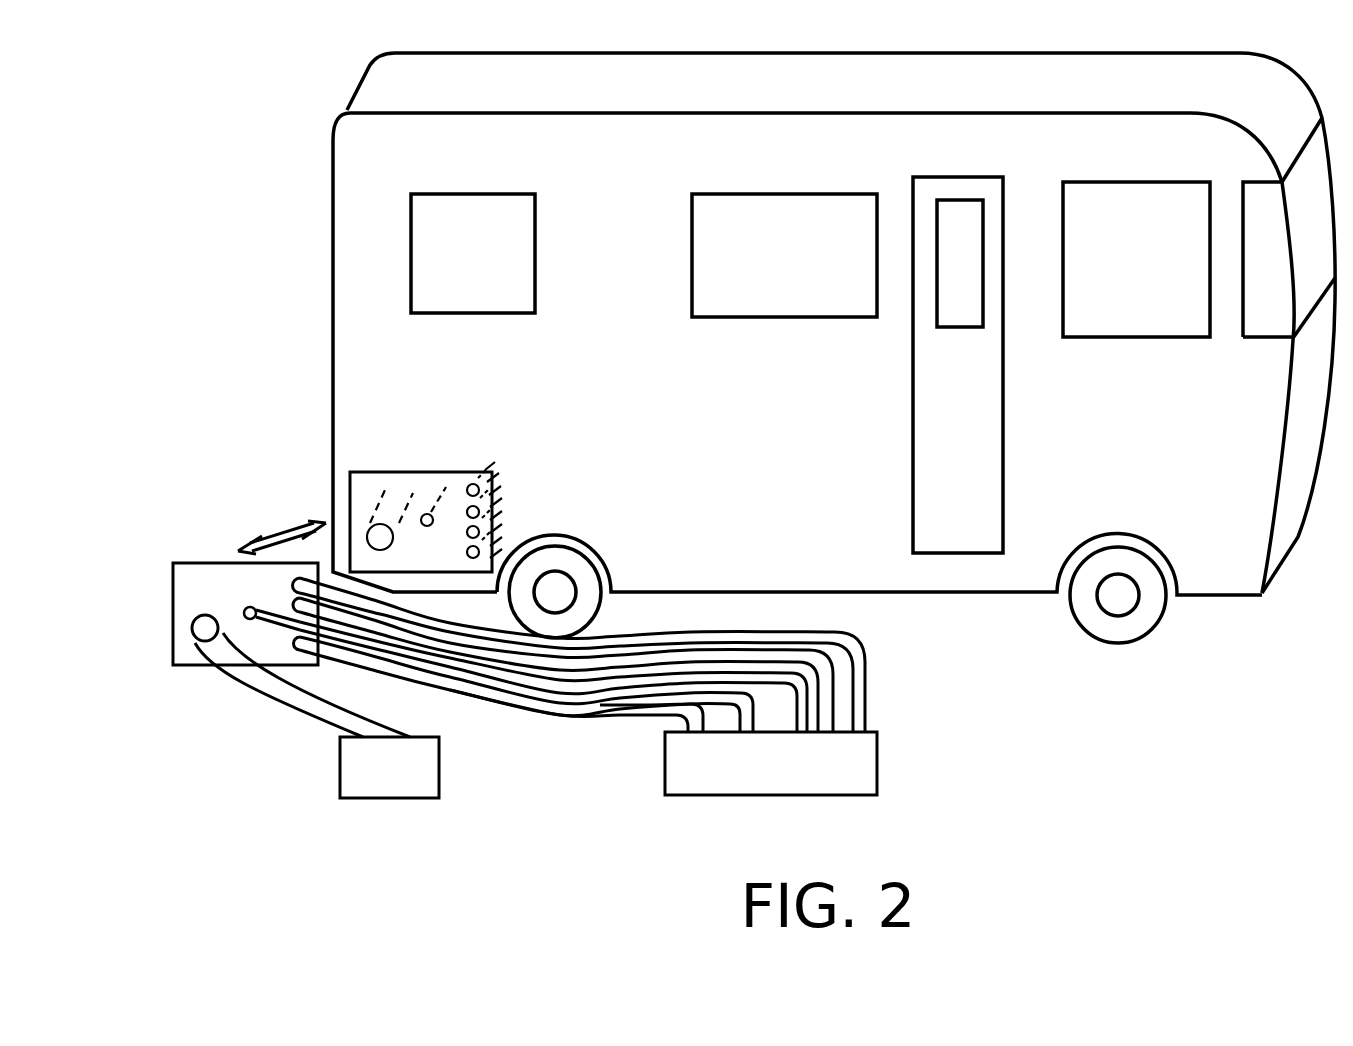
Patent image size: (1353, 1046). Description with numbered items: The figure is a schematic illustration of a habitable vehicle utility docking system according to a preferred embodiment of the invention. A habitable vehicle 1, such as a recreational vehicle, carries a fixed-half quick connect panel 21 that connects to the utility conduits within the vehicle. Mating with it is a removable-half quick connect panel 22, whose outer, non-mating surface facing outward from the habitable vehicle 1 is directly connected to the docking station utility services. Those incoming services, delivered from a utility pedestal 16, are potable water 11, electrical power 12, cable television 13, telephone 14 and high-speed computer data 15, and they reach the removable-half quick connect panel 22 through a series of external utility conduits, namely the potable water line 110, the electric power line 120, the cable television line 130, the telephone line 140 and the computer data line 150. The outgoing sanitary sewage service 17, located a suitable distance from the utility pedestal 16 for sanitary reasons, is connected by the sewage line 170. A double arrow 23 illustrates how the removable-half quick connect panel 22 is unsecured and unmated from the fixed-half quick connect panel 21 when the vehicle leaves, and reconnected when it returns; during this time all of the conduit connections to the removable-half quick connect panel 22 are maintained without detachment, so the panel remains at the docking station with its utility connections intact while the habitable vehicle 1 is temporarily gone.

The habitable vehicle 1 is at (833, 393).
The fixed-half quick connect panel 21 is at (365, 488).
The removable-half quick connect panel 22 is at (212, 590).
The double arrow 23 is at (283, 530).
The sewage line 170 is at (284, 694).
The sanitary sewage service 17 is at (367, 791).
The utility pedestal 16 is at (744, 791).
The electric power line 120 is at (790, 692).
The potable water line 110 is at (858, 673).
The cable television line 130 is at (828, 708).
The computer data line 150 is at (608, 717).
The telephone line 140 is at (665, 715).
The telephone 14 is at (747, 733).
The high-speed computer data 15 is at (665, 794).
The electrical power 12 is at (800, 733).
The cable television 13 is at (837, 733).
The potable water 11 is at (877, 740).